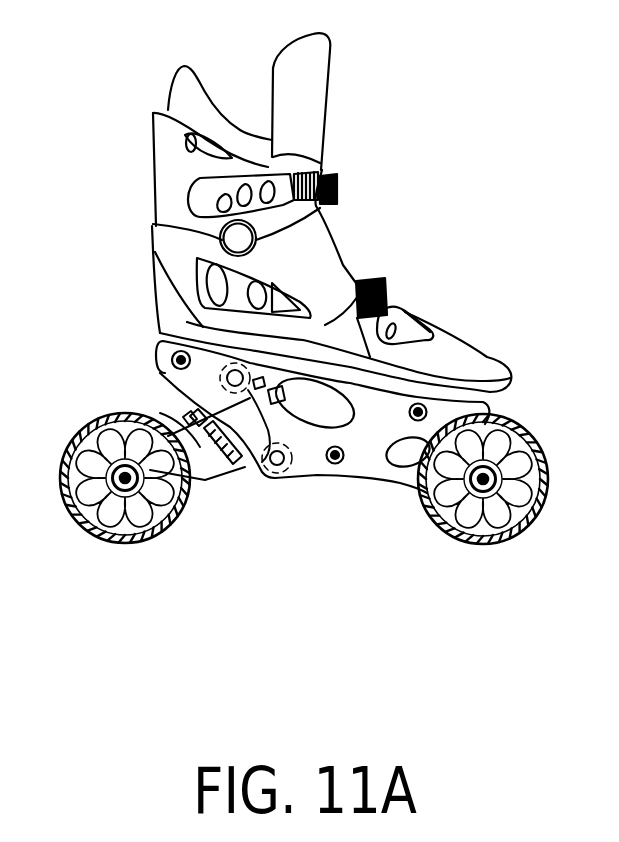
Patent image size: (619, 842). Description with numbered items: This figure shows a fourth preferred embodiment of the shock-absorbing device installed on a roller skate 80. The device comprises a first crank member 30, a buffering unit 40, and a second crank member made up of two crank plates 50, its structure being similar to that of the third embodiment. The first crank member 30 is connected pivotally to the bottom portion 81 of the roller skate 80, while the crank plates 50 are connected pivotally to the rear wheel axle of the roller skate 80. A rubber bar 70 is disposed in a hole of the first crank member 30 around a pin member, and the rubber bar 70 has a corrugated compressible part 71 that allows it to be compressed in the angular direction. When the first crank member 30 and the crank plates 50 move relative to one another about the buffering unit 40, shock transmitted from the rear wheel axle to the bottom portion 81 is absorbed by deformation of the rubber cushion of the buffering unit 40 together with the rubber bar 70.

The roller skate 80 is at (432, 229).
The bottom portion 81 is at (378, 453).
The first crank member 30 is at (317, 453).
The buffering unit 40 is at (268, 462).
The crank plates 50 is at (212, 504).
The rubber bar 70 is at (231, 486).
The corrugated compressible part 71 is at (168, 412).